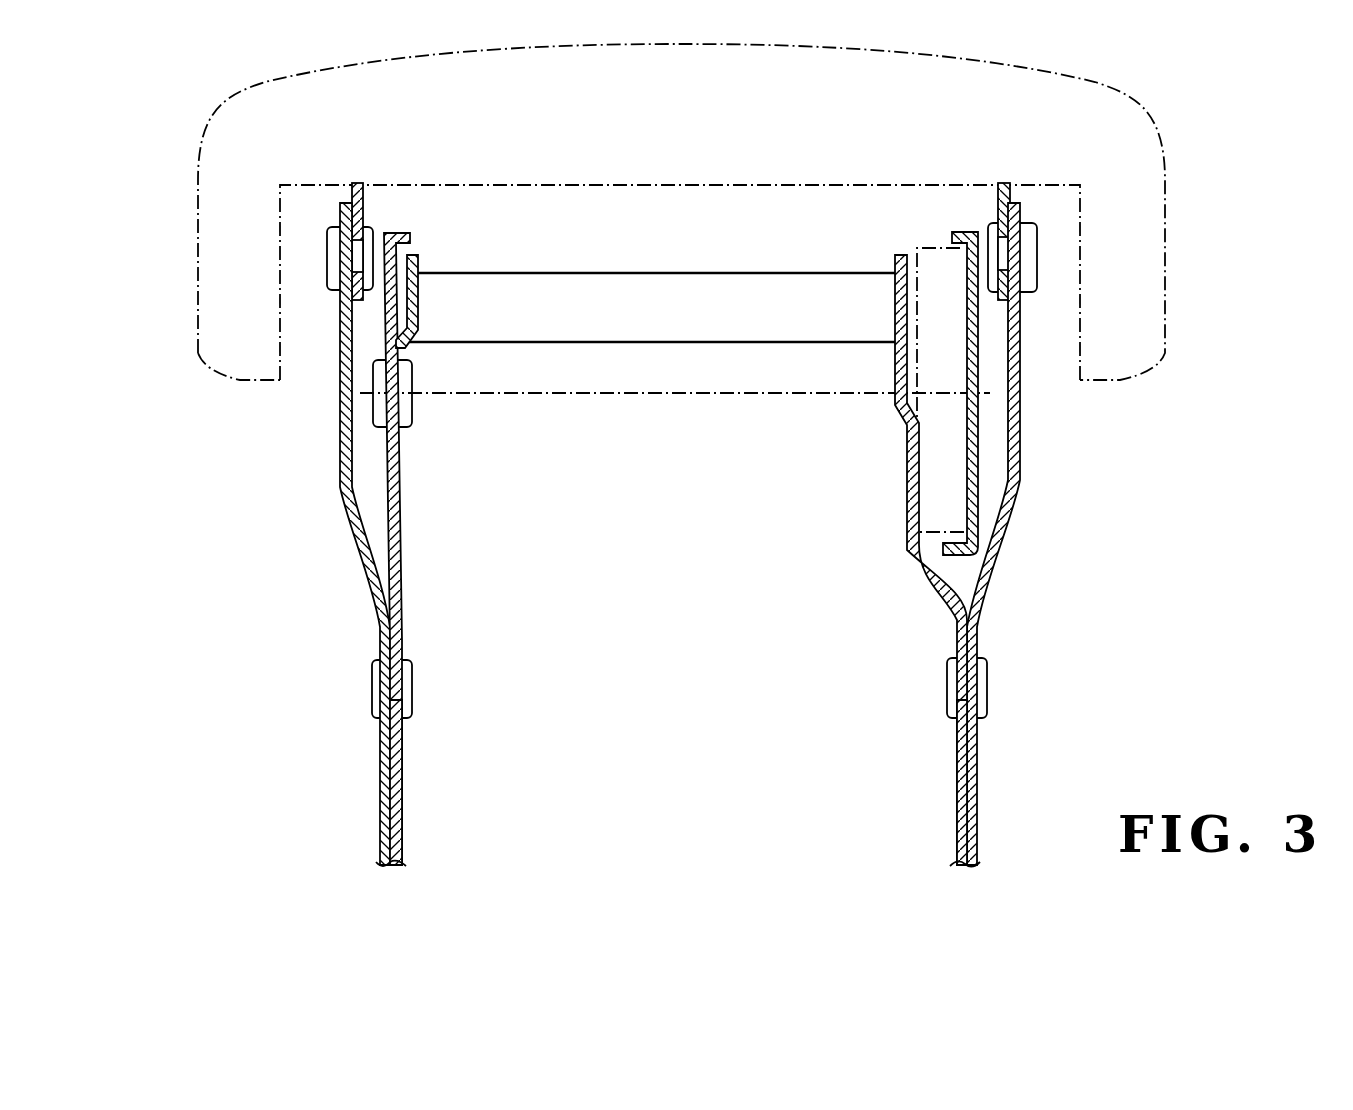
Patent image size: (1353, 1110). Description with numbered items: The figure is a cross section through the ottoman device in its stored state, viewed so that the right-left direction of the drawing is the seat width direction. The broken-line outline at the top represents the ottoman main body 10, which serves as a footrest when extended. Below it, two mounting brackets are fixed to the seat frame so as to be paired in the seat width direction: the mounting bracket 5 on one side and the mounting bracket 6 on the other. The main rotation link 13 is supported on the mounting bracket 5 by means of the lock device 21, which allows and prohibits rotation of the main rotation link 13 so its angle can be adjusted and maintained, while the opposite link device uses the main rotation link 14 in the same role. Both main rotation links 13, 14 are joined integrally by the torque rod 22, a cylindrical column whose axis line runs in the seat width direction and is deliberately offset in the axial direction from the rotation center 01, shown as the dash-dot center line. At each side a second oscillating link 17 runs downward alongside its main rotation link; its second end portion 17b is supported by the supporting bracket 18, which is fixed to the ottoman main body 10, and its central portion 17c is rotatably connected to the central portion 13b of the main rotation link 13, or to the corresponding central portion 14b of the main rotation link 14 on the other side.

The ottoman main body 10 is at (318, 80).
The rotation center 01 is at (453, 395).
The lock device 21 is at (930, 248).
The torque rod 22 is at (629, 330).
The second end portion of the second oscillating link 17b is at (340, 213).
The central portion of the second oscillating link 17c is at (380, 757).
The supporting bracket 18 is at (365, 212).
The second oscillating link 17 is at (340, 462).
The main rotation link 14 is at (402, 572).
The central portion of the main rotation link 14b is at (402, 757).
The mounting bracket 6 is at (383, 330).
The mounting bracket 5 is at (978, 346).
The main rotation link 13 is at (925, 592).
The central portion of the main rotation link 13b is at (957, 745).